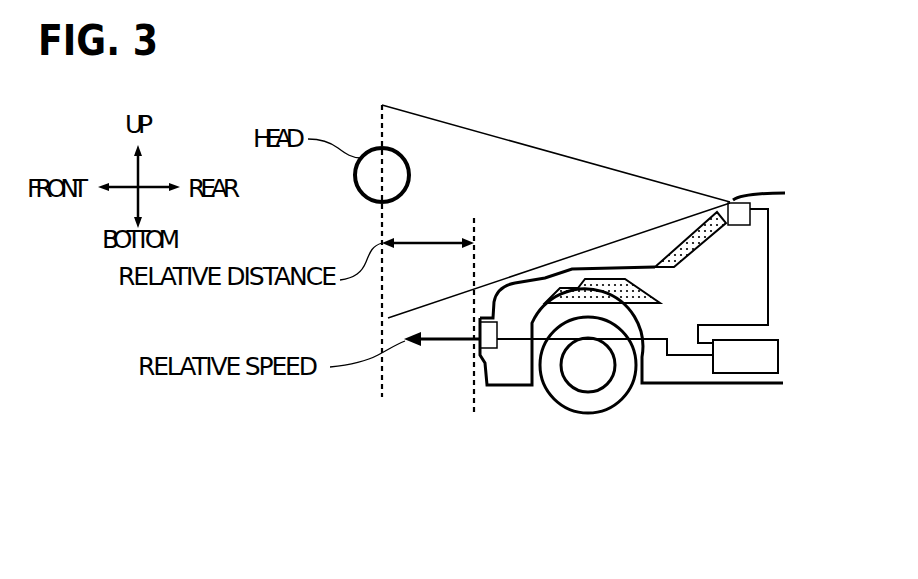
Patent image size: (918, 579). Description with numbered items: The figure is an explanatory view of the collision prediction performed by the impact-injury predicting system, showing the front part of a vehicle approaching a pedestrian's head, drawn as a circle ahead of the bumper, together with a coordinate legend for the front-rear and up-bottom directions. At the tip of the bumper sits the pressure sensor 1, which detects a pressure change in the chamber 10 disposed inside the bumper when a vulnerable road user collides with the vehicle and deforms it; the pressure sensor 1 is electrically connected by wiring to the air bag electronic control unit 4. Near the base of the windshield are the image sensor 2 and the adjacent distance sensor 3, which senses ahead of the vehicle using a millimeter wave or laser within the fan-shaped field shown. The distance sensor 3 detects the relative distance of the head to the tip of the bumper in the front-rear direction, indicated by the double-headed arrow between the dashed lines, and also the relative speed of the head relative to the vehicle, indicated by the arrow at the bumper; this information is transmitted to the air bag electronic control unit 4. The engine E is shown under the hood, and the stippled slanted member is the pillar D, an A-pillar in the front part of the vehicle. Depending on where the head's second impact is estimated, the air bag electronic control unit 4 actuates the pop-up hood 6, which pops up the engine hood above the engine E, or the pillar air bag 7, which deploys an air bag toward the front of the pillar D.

The pressure sensor 1 is at (538, 390).
The chamber 10 is at (487, 350).
The image sensor 2 is at (719, 181).
The distance sensor 3 is at (732, 201).
The air bag electronic control unit 4 is at (735, 375).
The pop-up hood 6 is at (542, 273).
The pillar air bag 7 is at (682, 243).
The pillar D is at (674, 231).
The engine E is at (590, 276).